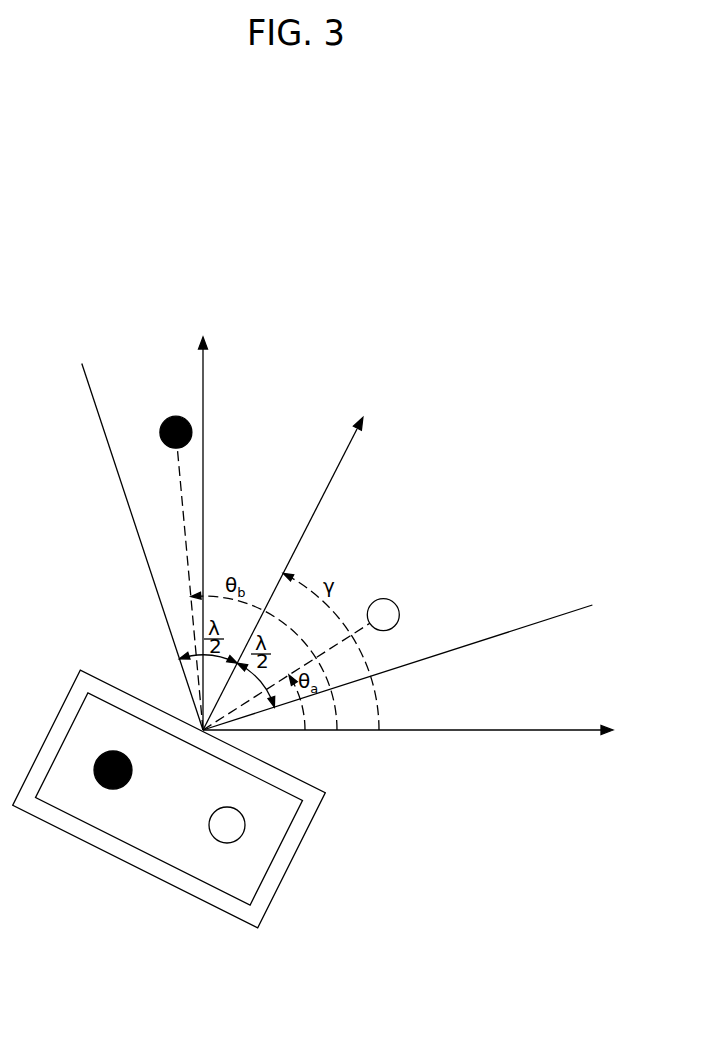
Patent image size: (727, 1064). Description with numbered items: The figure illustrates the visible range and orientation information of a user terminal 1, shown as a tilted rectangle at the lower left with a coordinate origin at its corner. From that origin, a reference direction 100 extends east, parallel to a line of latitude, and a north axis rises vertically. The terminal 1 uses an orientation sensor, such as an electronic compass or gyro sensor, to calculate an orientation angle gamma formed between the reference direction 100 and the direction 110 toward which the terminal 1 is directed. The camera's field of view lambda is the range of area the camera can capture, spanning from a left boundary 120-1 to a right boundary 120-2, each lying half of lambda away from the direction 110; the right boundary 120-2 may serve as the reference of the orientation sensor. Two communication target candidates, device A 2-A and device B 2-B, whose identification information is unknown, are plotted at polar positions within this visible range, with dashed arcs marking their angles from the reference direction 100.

The user terminal 1 is at (295, 857).
The reference direction 100 is at (497, 733).
The direction to which the terminal is directed 110 is at (340, 468).
The left boundary 120-1 is at (130, 510).
The right boundary 120-2 is at (507, 632).
The device A 2-A is at (375, 598).
The device B 2-B is at (168, 418).